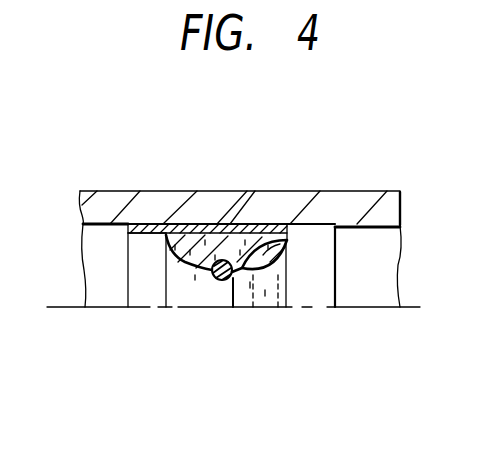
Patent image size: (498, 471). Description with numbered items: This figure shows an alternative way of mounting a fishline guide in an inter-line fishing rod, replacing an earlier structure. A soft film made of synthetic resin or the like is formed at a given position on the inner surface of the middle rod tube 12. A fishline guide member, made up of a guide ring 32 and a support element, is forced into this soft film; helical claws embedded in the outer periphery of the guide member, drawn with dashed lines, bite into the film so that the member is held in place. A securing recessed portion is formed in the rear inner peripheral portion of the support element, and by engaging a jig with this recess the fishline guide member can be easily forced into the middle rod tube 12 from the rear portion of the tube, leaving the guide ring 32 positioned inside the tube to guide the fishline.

The middle rod tube 12 is at (358, 200).
The guide ring 32 is at (222, 281).